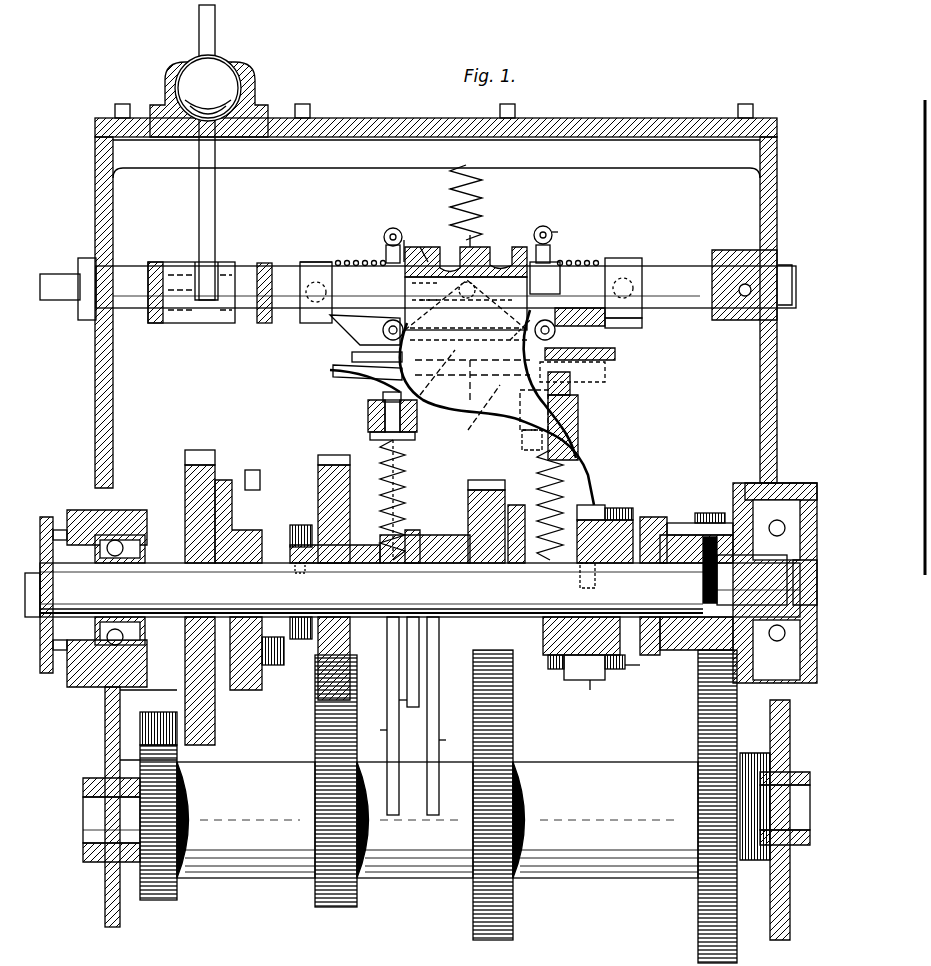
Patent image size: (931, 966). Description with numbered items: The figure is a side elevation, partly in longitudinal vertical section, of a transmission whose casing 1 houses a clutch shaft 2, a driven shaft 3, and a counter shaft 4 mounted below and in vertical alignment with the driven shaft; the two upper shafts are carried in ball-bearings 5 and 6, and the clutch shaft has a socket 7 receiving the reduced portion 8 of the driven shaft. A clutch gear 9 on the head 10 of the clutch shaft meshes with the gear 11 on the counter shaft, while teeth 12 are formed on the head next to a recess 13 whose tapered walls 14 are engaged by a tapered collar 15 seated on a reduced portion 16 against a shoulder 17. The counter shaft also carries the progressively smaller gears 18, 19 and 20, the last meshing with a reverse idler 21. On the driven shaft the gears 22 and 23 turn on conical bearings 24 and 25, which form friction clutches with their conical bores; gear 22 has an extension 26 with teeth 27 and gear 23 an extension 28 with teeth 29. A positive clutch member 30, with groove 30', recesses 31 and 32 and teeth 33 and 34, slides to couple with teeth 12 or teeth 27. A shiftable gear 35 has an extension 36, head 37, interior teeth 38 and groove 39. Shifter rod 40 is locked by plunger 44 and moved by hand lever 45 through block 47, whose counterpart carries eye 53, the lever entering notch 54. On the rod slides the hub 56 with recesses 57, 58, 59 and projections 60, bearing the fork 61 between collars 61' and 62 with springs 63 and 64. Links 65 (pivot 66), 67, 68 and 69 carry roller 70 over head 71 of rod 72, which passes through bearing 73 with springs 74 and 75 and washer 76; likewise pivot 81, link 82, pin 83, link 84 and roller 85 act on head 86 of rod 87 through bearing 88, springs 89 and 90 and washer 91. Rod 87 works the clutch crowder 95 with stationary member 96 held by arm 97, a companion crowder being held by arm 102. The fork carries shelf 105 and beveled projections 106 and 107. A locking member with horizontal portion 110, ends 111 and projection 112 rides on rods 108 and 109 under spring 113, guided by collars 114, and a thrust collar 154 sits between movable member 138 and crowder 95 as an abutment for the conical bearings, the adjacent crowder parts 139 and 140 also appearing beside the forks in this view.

The transmission casing 1 is at (105, 420).
The clutch shaft 2 is at (775, 575).
The driven shaft 3 is at (412, 590).
The counter shaft 4 is at (90, 820).
The ball-bearing 5 is at (750, 505).
The ball-bearing 6 is at (142, 520).
The socket 7 is at (805, 582).
The reduced portion 8 is at (752, 580).
The clutch gear 9 is at (712, 513).
The head 10 is at (690, 650).
The gear 11 is at (700, 903).
The teeth 12 is at (650, 517).
The recess 13 is at (630, 670).
The tapered walls 14 is at (672, 535).
The tapered collar 15 is at (680, 523).
The reduced portion 16 is at (652, 655).
The shoulder 17 is at (660, 575).
The gear 18 is at (475, 895).
The gear 19 is at (318, 895).
The gear 20 is at (158, 900).
The reverse idler 21 is at (145, 715).
The gear 22 is at (468, 495).
The gear 23 is at (320, 460).
The conical bearing 24 is at (448, 535).
The conical bearing 25 is at (360, 545).
The extension 26 is at (512, 512).
The teeth 27 is at (548, 655).
The extension 28 is at (300, 573).
The teeth 29 is at (298, 524).
The positive clutch member 30 is at (602, 494).
The circumferential groove 30' is at (600, 705).
The recess 31 is at (614, 670).
The recess 32 is at (556, 670).
The teeth 33 is at (620, 520).
The teeth 34 is at (575, 680).
The gear 35 is at (200, 450).
The reduced extension 36 is at (240, 670).
The enlarged head 37 is at (272, 668).
The interior teeth 38 is at (255, 495).
The circumferential groove 39 is at (235, 525).
The shifter rod 40 is at (690, 285).
The interlocking plunger 44 is at (745, 298).
The hand lever 45 is at (212, 42).
The block 47 is at (178, 268).
The eye 53 is at (262, 322).
The notch 54 is at (222, 275).
The shifter fork hub 56 is at (500, 258).
The recess 57 is at (548, 228).
The recess 58 is at (490, 250).
The recess 59 is at (420, 247).
The projections 60 is at (404, 240).
The shifter fork 61 is at (497, 407).
The collar 61' is at (312, 246).
The collar 62 is at (630, 264).
The coiled spring 63 is at (350, 260).
The coiled spring 64 is at (590, 260).
The link 65 is at (355, 322).
The pivot 66 is at (306, 318).
The pivot pin 67 is at (404, 335).
The link 68 is at (445, 330).
The pivot 69 is at (520, 335).
The roller 70 is at (352, 357).
The head 71 is at (350, 375).
The rod 72 is at (417, 420).
The bearing projection 73 is at (370, 420).
The coiled spring 74 is at (383, 397).
The coiled spring 75 is at (405, 462).
The washer 76 is at (382, 452).
The pivot 81 is at (642, 322).
The link 82 is at (600, 322).
The pivot pin 83 is at (556, 330).
The link 84 is at (478, 388).
The roller 85 is at (516, 352).
The head 86 is at (570, 385).
The rod 87 is at (578, 421).
The bearing 88 is at (535, 445).
The coiled spring 89 is at (605, 372).
The coiled spring 90 is at (540, 475).
The washer 91 is at (578, 440).
The clutch crowder 95 is at (410, 682).
The stationary member 96 is at (438, 680).
The arm 97 is at (440, 720).
The arm 102 is at (773, 702).
The shelf 105 is at (478, 420).
The beveled projection 106 is at (332, 372).
The beveled projection 107 is at (615, 356).
The rod 108 is at (553, 232).
The rod 109 is at (392, 228).
The horizontal portion 110 is at (470, 235).
The depending end portions 111 is at (388, 255).
The projection 112 is at (466, 247).
The coiled spring 113 is at (466, 165).
The collars 114 is at (556, 262).
The movable member 138 is at (400, 705).
The fork 139 is at (388, 670).
The fork 140 is at (388, 730).
The thrust collar 154 is at (414, 530).